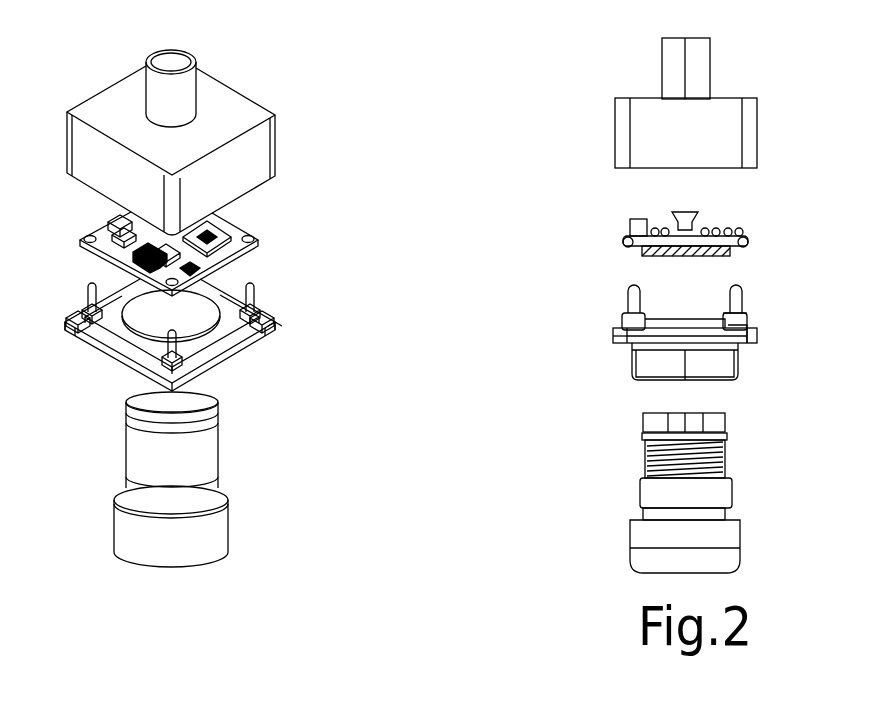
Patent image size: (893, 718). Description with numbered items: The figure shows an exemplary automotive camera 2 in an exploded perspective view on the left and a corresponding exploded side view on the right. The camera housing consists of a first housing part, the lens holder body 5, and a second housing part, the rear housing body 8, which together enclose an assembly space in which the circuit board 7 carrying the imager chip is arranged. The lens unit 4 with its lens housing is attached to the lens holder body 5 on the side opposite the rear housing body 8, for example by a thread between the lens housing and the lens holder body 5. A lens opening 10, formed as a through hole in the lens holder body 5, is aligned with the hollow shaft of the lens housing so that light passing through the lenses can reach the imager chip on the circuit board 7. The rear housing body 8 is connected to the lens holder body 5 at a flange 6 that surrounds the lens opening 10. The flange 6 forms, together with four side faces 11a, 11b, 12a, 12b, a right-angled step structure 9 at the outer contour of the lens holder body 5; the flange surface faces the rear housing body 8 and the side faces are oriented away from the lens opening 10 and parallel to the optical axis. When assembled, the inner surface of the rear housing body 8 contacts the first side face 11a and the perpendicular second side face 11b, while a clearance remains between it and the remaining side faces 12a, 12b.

The automotive camera 2 is at (533, 88).
The lens unit 4 is at (665, 512).
The lens holder body 5 is at (411, 336).
The flange 6 is at (67, 318).
The circuit board 7 is at (618, 239).
The rear housing body 8 is at (610, 125).
The step structure 9 is at (610, 336).
The lens opening 10 is at (157, 312).
The first side face 11a is at (276, 327).
The second side face 11b is at (750, 314).
The side face 12a is at (262, 306).
The side face 12b is at (100, 352).